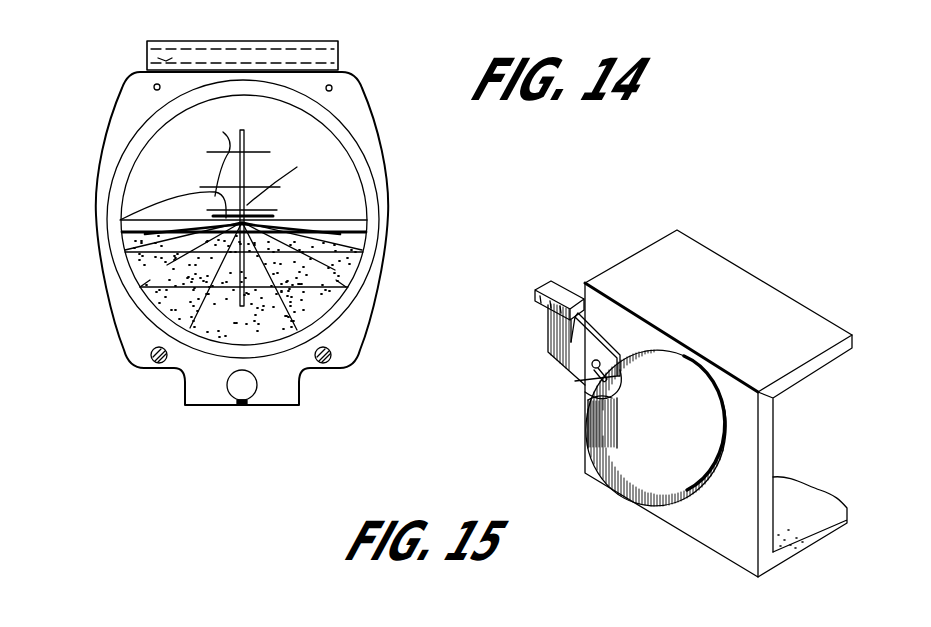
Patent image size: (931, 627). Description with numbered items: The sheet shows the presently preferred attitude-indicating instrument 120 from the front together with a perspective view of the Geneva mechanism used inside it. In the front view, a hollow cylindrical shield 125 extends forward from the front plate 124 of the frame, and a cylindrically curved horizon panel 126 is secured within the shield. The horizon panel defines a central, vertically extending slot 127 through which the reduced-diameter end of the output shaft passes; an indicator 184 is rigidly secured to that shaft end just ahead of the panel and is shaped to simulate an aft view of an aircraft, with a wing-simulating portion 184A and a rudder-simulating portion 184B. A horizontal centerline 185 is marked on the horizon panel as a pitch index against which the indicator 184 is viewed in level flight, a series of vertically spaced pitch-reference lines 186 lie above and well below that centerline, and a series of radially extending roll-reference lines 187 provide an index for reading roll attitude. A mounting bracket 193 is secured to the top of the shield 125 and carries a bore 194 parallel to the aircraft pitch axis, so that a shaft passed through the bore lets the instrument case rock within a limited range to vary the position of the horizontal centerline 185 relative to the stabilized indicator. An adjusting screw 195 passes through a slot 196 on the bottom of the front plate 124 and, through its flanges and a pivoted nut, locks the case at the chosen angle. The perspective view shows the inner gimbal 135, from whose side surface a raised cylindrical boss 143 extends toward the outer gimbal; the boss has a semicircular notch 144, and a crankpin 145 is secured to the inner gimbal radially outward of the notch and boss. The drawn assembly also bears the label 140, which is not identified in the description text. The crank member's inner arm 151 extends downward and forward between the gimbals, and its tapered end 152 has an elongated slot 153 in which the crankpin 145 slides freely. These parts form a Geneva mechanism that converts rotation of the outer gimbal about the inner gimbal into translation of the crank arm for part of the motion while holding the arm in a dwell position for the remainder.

In FIG. 14, the attitude-indicating instrument 120 is at (368, 86).
In FIG. 14, the front plate 124 is at (380, 138).
In FIG. 14, the hollow cylindrical shield 125 is at (355, 327).
In FIG. 14, the horizon panel 126 is at (179, 142).
In FIG. 14, the central vertically extending slot 127 is at (250, 140).
In FIG. 14, the indicator 184 is at (302, 215).
In FIG. 14, the wing-simulating portion 184A is at (173, 198).
In FIG. 14, the rudder-simulating portion 184B is at (293, 180).
In FIG. 14, the horizontal centerline 185 is at (350, 220).
In FIG. 14, the pitch-reference lines 186 is at (215, 151).
In FIG. 14, the roll-reference lines 187 is at (150, 216).
In FIG. 14, the mounting bracket 193 is at (342, 54).
In FIG. 14, the bore 194 is at (150, 53).
In FIG. 14, the adjusting screw 195 is at (228, 383).
In FIG. 14, the slot 196 is at (242, 405).
In FIG. 15, the inner gimbal 135 is at (737, 532).
In FIG. 15, the adjusting post 140 is at (566, 288).
In FIG. 15, the raised cylindrical boss 143 is at (684, 529).
In FIG. 15, the semicircular notch 144 is at (592, 398).
In FIG. 15, the crankpin 145 is at (578, 377).
In FIG. 15, the inner arm 151 is at (582, 352).
In FIG. 15, the tapered end of inner arm 152 is at (612, 398).
In FIG. 15, the elongated slot 153 is at (625, 368).